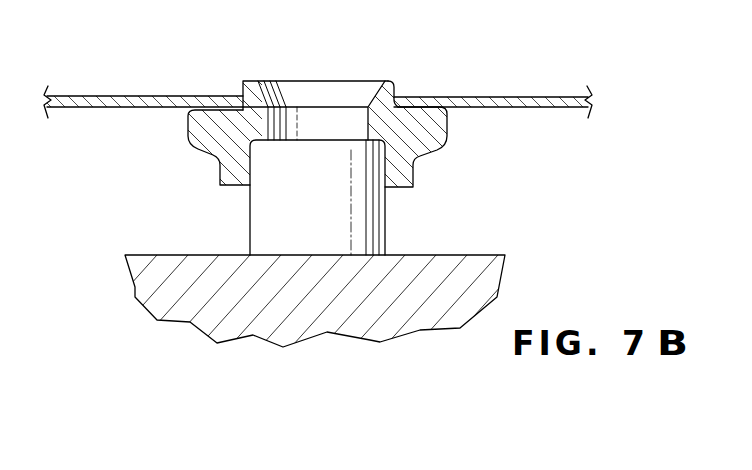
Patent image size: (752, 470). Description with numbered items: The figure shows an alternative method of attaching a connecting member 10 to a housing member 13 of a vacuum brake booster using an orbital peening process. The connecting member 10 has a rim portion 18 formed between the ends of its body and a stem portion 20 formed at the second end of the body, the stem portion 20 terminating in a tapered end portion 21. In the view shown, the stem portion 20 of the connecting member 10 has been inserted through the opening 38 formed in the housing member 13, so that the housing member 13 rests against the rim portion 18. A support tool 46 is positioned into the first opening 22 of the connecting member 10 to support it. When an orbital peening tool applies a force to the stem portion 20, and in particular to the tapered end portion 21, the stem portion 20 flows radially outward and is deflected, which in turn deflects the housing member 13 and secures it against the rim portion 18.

The connecting member 10 is at (190, 148).
The housing member 13 is at (548, 79).
The rim portion 18 is at (448, 126).
The stem portion 20 is at (242, 77).
The tapered end portion 21 is at (372, 102).
The first opening 22 is at (247, 188).
The opening 38 is at (384, 100).
The support tool 46 is at (387, 203).